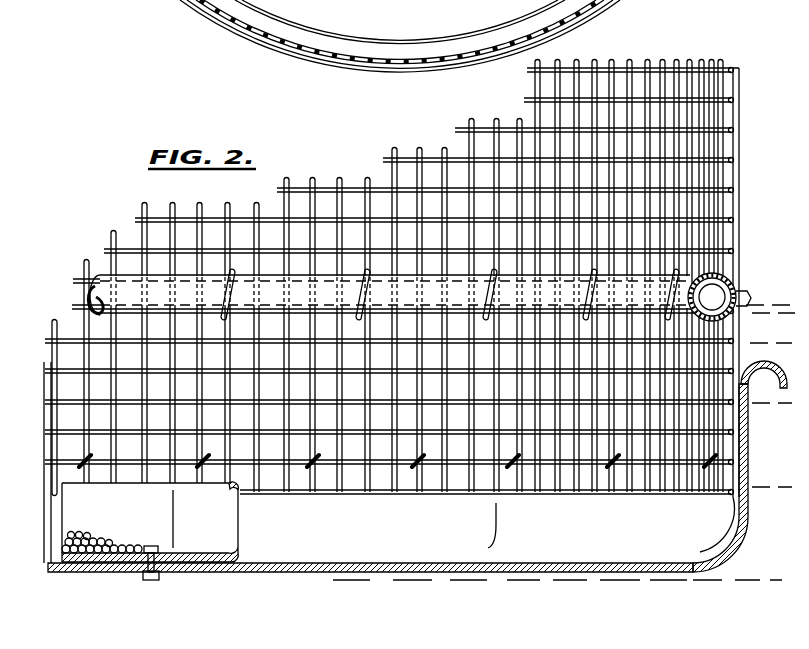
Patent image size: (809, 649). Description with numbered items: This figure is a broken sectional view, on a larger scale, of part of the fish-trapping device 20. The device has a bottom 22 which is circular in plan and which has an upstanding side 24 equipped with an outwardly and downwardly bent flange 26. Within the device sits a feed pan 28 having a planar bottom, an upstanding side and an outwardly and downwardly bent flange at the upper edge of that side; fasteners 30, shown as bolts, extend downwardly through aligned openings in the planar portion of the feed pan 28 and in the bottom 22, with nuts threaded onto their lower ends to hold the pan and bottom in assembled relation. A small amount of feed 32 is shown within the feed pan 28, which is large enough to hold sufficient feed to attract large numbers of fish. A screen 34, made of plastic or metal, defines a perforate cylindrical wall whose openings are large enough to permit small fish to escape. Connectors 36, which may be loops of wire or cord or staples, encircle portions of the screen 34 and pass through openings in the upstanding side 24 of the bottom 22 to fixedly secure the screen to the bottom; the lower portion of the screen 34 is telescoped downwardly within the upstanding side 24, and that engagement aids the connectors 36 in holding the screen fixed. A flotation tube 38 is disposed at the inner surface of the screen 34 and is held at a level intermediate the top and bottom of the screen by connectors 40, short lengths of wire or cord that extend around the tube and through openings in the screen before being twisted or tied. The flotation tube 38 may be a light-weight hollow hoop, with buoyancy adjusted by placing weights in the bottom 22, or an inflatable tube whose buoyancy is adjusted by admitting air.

The fish-trapping device 20 is at (693, 42).
The bottom 22 is at (510, 571).
The upstanding side 24 is at (748, 430).
The outwardly and downwardly bent flange 26 is at (758, 363).
The feed pan 28 is at (236, 516).
The fasteners 30 is at (150, 548).
The feed 32 is at (74, 540).
The screen 34 is at (590, 70).
The connectors 36 is at (418, 462).
The flotation tube 38 is at (724, 290).
The connectors 40 is at (364, 302).